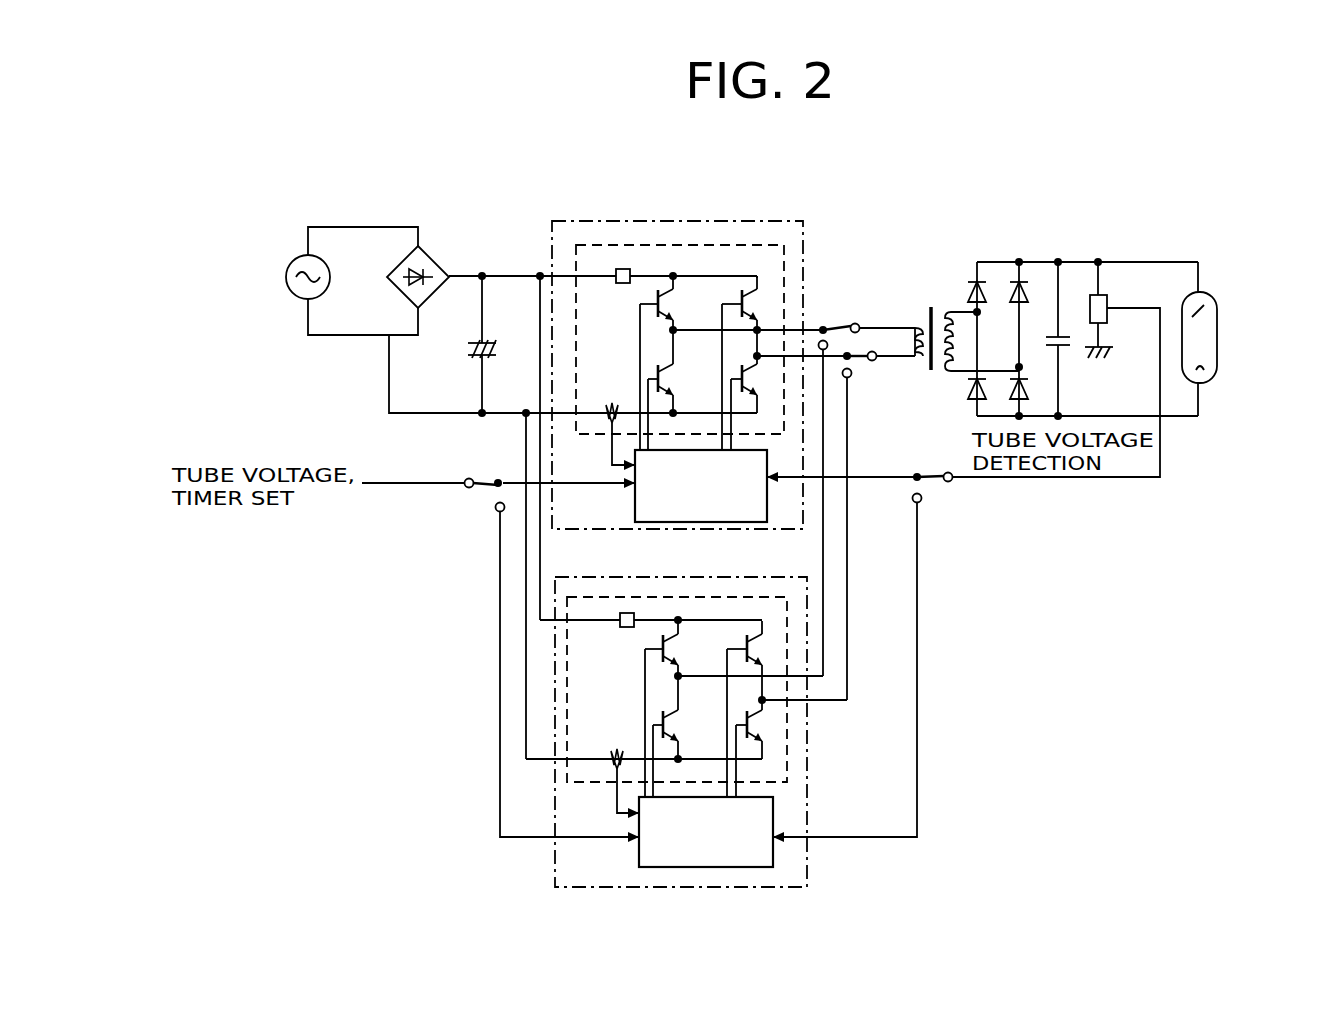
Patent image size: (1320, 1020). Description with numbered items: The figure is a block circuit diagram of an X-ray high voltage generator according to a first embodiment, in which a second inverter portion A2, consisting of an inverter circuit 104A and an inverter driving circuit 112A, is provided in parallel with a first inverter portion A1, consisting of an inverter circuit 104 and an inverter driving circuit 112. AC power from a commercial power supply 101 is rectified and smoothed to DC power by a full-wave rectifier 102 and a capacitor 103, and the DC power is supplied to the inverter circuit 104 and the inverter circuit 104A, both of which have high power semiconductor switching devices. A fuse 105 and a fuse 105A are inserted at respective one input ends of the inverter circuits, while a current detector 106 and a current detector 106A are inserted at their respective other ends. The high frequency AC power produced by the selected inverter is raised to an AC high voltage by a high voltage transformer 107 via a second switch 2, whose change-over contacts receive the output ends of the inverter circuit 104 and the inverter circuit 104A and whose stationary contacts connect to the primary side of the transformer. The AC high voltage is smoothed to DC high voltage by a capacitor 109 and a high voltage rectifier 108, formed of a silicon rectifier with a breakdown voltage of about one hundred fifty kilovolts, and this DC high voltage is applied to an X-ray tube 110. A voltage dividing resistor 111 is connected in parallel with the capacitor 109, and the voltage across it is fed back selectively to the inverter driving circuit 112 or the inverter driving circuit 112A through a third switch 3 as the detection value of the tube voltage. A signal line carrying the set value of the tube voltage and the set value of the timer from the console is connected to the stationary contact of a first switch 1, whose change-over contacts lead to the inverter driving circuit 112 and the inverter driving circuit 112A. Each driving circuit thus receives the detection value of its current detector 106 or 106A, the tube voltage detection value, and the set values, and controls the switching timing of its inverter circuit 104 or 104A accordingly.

The commercial power supply 101 is at (285, 282).
The full-wave rectifier 102 is at (434, 258).
The capacitor 103 is at (470, 352).
The inverter circuit 104 is at (663, 245).
The fuse 105 is at (622, 266).
The current detector 106 is at (616, 402).
The high voltage transformer 107 is at (931, 306).
The high voltage rectifier 108 is at (991, 258).
The capacitor 109 is at (1066, 320).
The X-ray tube 110 is at (1218, 310).
The voltage dividing resistor 111 is at (1108, 295).
The inverter driving circuit 112 is at (634, 495).
The inverter circuit 104A is at (700, 597).
The fuse 105A is at (625, 611).
The current detector 106A is at (617, 750).
The inverter driving circuit 112A is at (722, 868).
The first inverter portion A1 is at (736, 220).
The second inverter portion A2 is at (646, 888).
The first switch 1 is at (489, 490).
The second switch 2 is at (835, 324).
The third switch 3 is at (925, 482).